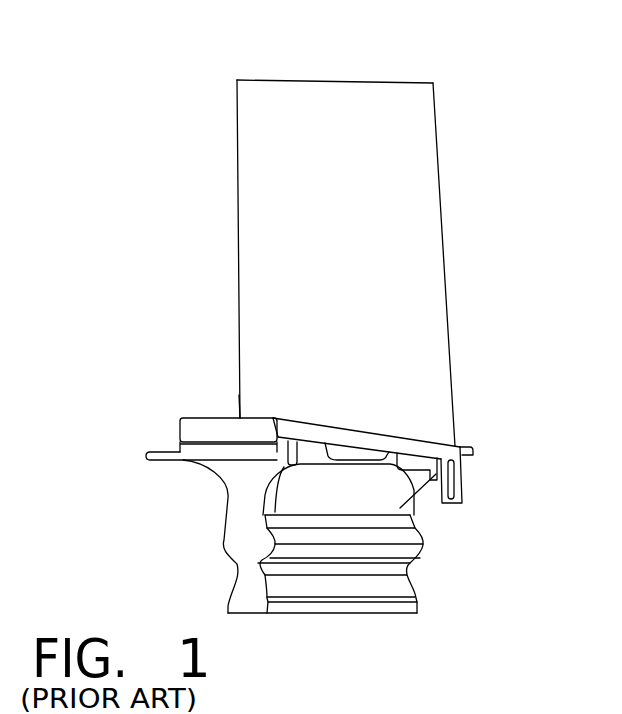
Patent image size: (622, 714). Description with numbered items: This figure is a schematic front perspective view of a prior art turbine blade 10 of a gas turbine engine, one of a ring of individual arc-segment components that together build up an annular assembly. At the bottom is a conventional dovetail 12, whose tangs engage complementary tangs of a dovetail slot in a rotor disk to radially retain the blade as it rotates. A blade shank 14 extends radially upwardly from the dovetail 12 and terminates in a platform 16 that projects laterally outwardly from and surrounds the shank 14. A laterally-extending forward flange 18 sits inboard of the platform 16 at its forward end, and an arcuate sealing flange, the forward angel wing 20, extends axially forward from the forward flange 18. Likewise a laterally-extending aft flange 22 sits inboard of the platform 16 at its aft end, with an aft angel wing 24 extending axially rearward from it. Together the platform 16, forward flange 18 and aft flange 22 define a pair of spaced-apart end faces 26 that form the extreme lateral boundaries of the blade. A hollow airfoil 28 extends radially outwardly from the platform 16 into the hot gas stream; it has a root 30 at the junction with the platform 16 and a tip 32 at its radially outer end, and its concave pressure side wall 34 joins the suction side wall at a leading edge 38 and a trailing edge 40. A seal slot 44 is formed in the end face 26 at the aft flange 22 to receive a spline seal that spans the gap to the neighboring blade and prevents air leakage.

The turbine blade 10 is at (470, 57).
The dovetail 12 is at (240, 600).
The blade shank 14 is at (243, 498).
The platform 16 is at (426, 434).
The forward flange 18 is at (180, 430).
The forward angel wing 20 is at (165, 462).
The aft flange 22 is at (463, 463).
The aft angel wing 24 is at (456, 481).
The end faces 26 is at (475, 438).
The airfoil 28 is at (460, 245).
The root 30 is at (250, 418).
The tip 32 is at (310, 79).
The concave pressure side wall 34 is at (334, 252).
The leading edge 38 is at (237, 178).
The trailing edge 40 is at (443, 200).
The seal slot 44 is at (463, 495).